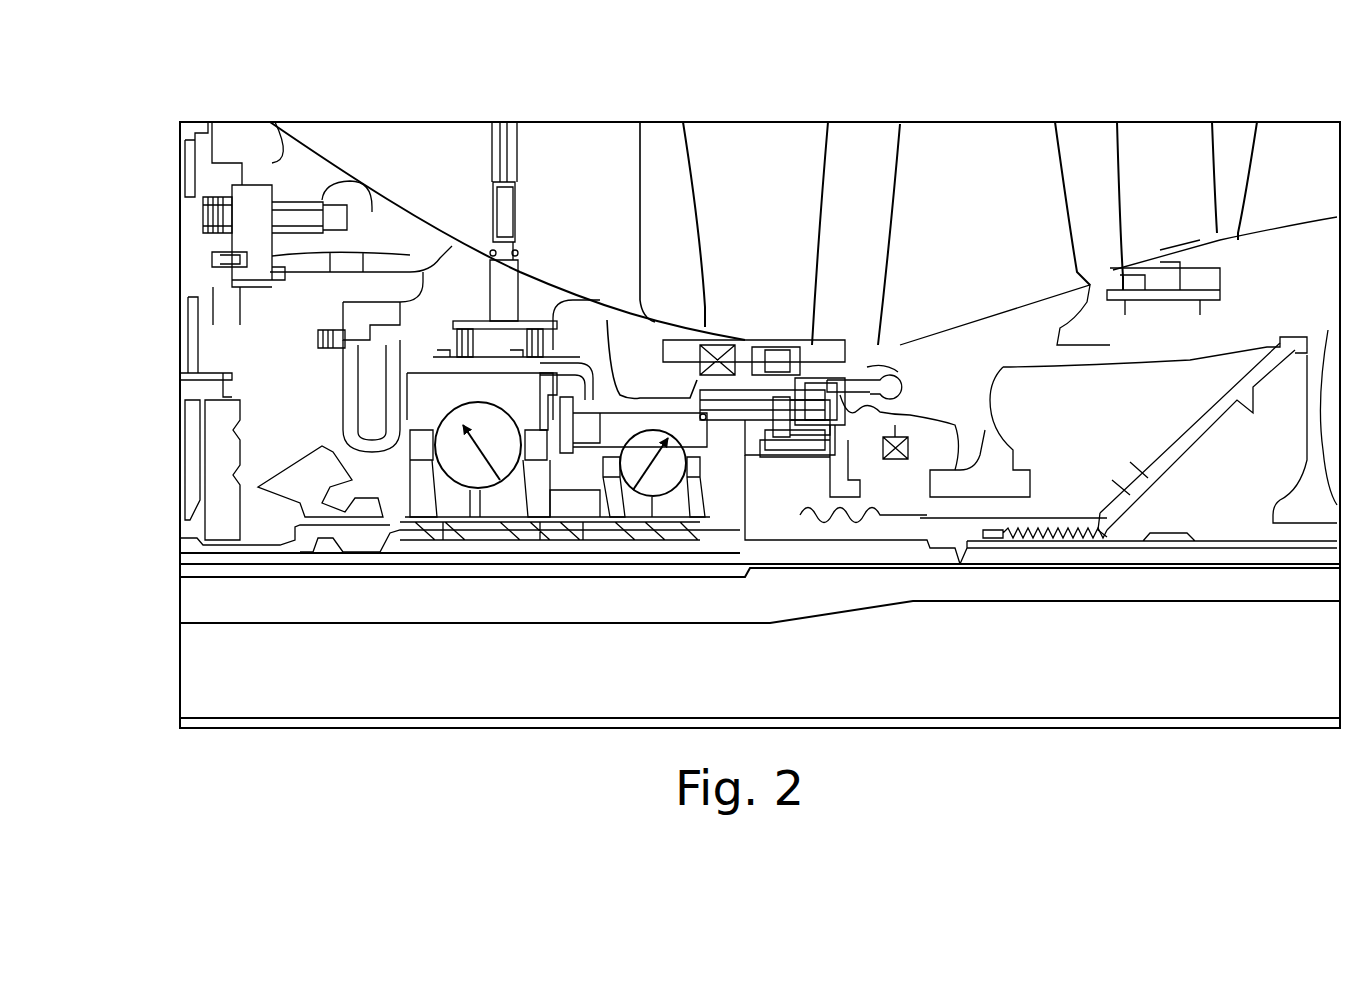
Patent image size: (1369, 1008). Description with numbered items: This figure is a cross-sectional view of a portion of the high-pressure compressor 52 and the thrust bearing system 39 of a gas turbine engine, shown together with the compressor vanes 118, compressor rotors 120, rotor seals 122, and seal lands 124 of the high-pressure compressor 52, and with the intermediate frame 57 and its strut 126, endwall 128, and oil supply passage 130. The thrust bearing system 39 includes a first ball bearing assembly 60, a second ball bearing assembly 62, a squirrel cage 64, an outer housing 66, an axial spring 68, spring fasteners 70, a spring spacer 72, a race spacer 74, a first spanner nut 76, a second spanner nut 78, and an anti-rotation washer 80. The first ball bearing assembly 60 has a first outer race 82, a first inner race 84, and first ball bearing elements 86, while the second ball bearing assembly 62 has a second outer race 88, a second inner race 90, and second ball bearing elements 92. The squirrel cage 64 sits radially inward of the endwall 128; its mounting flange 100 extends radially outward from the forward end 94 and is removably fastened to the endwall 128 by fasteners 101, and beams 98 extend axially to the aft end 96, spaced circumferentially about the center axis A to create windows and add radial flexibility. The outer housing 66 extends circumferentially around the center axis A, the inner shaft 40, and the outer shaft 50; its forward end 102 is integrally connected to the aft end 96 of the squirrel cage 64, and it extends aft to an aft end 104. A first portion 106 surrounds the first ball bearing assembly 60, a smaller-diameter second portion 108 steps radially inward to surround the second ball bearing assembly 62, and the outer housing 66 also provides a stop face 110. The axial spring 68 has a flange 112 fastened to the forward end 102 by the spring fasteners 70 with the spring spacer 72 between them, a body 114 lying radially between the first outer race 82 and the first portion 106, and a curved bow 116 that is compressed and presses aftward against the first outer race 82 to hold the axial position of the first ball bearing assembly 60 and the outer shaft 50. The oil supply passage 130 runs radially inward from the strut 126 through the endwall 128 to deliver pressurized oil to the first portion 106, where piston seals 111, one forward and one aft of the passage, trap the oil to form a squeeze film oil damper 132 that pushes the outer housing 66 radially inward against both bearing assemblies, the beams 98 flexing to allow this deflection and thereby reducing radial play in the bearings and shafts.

The thrust bearing system 39 is at (300, 366).
The inner shaft 40 is at (887, 587).
The outer shaft 50 is at (700, 553).
The high-pressure compressor 52 is at (983, 148).
The intermediate frame 57 is at (613, 150).
The first ball bearing assembly 60 is at (456, 492).
The second ball bearing assembly 62 is at (666, 500).
The squirrel cage 64 is at (372, 243).
The outer housing 66 is at (600, 300).
The axial spring 68 is at (341, 417).
The spring fasteners 70 is at (322, 343).
The spring spacer 72 is at (362, 312).
The race spacer 74 is at (582, 525).
The first spanner nut 76 is at (645, 345).
The second spanner nut 78 is at (641, 293).
The anti-rotation washer 80 is at (566, 455).
The first outer race 82 is at (545, 412).
The first inner race 84 is at (537, 540).
The first plurality of ball bearing elements 86 is at (482, 472).
The second outer race 88 is at (668, 372).
The second inner race 90 is at (707, 540).
The second ball bearing elements 92 is at (738, 345).
The forward end 94 is at (265, 265).
The aft end 96 is at (412, 312).
The beams 98 is at (290, 268).
The mounting flange 100 is at (257, 197).
The fasteners 101 is at (285, 218).
The forward end 102 is at (518, 240).
The aft end 104 is at (820, 365).
The first portion 106 is at (505, 345).
The second portion 108 is at (710, 350).
The stop face 110 is at (860, 370).
The piston seals 111 is at (533, 300).
The flange 112 is at (342, 382).
The body 114 is at (597, 342).
The curved bow 116 is at (375, 445).
The compressor vanes 118 is at (767, 173).
The compressor rotors 120 is at (998, 197).
The rotor seals 122 is at (920, 420).
The seal lands 124 is at (895, 376).
The strut 126 is at (641, 147).
The endwall 128 is at (482, 312).
The oil supply passage 130 is at (516, 215).
The squeeze film oil damper 132 is at (518, 220).
The center axis A is at (232, 716).